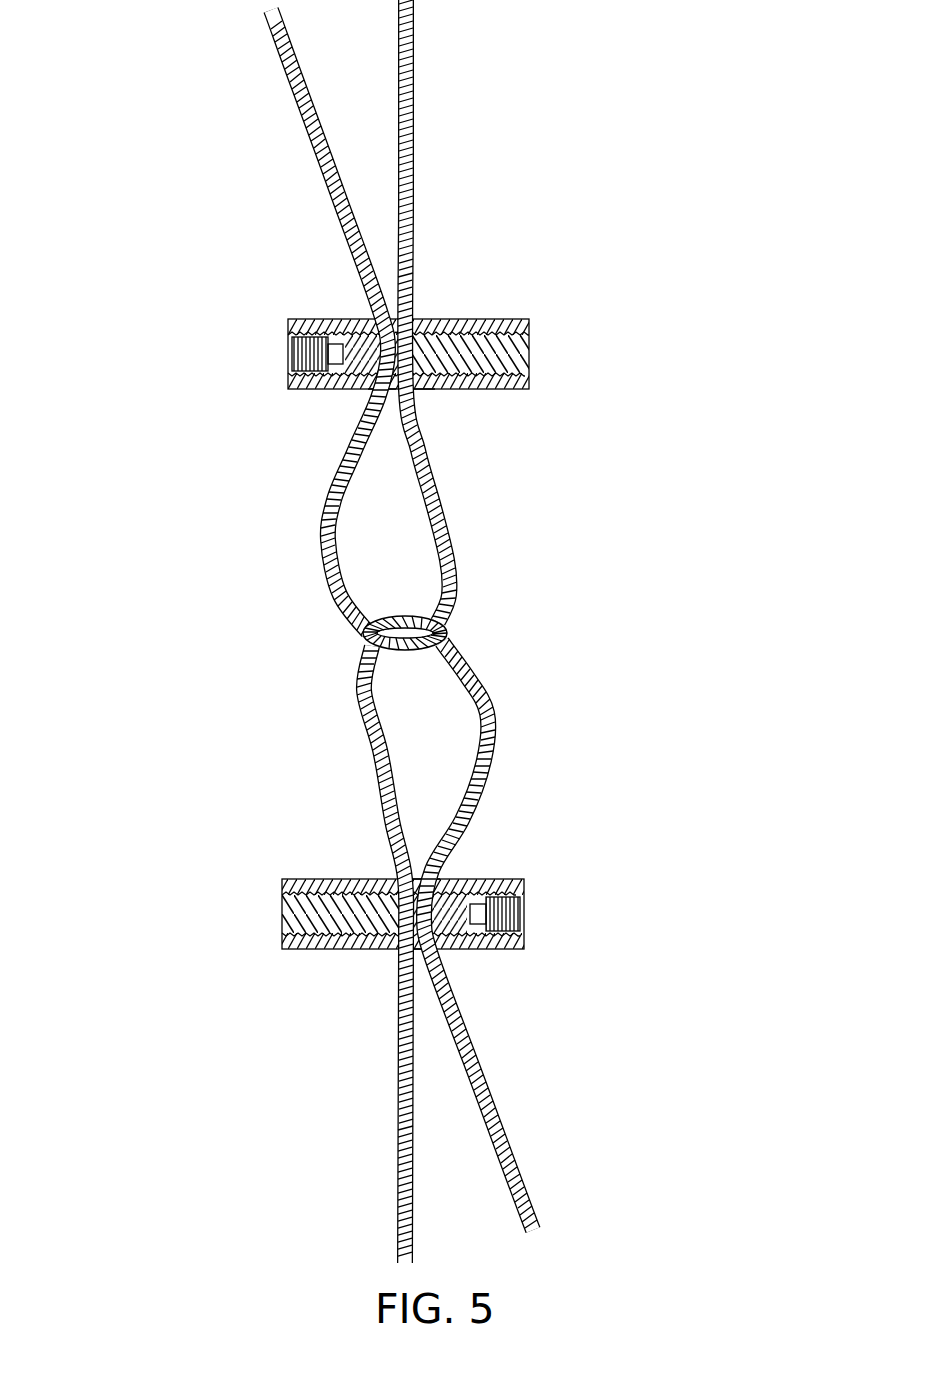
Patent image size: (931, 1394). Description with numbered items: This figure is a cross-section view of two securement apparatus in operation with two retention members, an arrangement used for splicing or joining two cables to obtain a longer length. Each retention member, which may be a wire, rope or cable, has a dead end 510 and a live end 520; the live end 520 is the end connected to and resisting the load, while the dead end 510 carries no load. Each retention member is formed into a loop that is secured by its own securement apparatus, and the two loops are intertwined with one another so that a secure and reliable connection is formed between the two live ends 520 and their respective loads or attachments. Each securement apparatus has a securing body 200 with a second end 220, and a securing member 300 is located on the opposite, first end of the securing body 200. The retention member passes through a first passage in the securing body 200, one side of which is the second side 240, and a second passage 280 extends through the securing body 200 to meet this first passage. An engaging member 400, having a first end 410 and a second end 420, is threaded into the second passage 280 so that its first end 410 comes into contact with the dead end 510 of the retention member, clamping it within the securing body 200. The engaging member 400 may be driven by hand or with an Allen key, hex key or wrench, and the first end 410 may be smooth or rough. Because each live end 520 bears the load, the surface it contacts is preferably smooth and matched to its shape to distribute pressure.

The securing body 200 is at (348, 394).
The second end 220 is at (288, 320).
The second side 240 is at (375, 393).
The second passage 280 is at (287, 356).
The securing member 300 is at (519, 362).
The engaging member 400 is at (367, 340).
The first end 410 is at (420, 382).
The second end 420 is at (343, 333).
The dead end 510 is at (295, 107).
The live end 520 is at (416, 60).